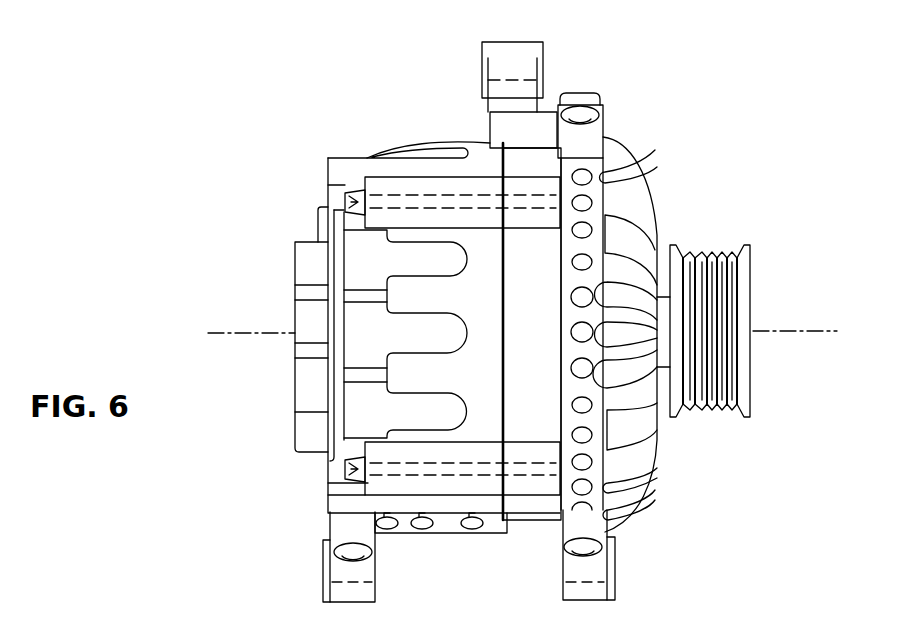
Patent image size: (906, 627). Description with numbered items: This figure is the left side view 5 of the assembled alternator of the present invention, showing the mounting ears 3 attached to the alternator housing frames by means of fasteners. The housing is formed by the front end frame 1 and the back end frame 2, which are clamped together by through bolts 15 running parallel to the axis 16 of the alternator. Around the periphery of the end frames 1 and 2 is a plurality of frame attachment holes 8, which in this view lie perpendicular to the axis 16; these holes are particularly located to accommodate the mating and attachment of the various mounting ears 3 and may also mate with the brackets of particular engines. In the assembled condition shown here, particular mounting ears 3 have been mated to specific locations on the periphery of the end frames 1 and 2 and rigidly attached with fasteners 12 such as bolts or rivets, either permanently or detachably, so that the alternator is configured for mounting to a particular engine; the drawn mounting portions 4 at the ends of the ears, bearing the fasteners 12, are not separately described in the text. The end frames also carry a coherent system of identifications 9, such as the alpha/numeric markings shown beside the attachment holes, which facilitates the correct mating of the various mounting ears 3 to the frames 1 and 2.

The front end frame 1 is at (640, 218).
The back end frame 2 is at (343, 174).
The mounting ears 3 is at (510, 100).
The mounting bracket 4 is at (547, 68).
The left side view 5 is at (687, 448).
The frame attachment holes 8 is at (581, 203).
The identifications 9 is at (570, 256).
The fasteners 12 is at (580, 93).
The through bolts 15 is at (345, 200).
The axis 16 is at (282, 333).